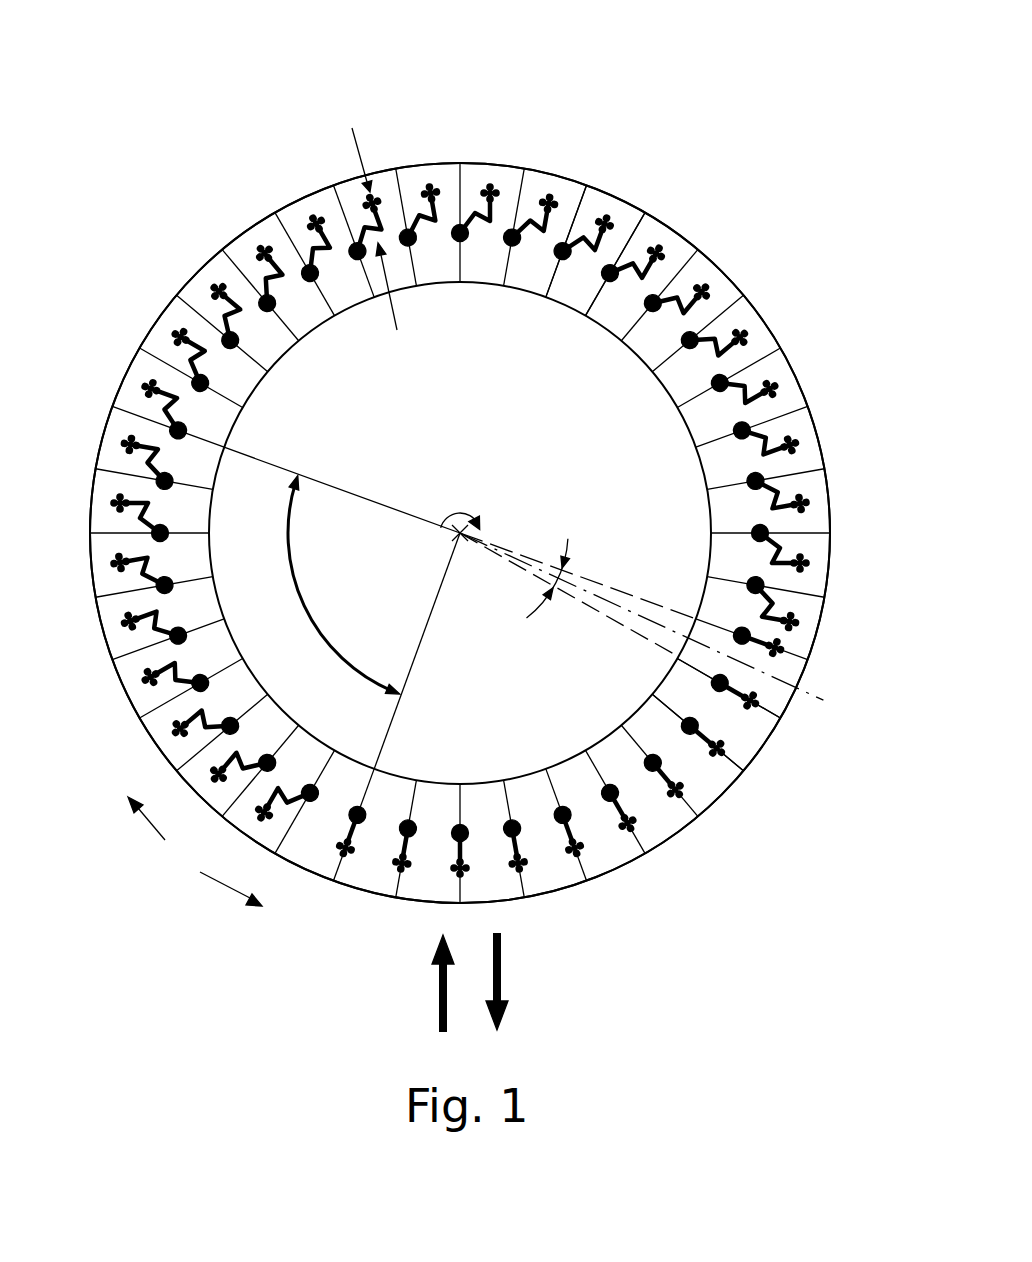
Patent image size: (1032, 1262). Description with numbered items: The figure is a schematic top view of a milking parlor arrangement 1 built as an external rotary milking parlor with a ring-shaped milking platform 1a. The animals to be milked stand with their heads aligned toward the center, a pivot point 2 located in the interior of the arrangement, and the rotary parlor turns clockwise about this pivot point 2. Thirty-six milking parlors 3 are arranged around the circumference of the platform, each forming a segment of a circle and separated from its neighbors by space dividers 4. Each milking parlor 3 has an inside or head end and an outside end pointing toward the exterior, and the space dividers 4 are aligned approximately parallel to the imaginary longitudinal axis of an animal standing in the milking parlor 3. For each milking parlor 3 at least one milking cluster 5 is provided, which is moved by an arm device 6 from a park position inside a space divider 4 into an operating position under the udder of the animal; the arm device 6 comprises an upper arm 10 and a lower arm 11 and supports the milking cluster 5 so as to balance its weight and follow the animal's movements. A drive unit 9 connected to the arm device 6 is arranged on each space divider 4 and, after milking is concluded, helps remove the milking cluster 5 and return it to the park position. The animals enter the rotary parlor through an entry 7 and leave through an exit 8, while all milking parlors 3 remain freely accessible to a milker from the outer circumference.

The milking parlor arrangement 1 is at (447, 72).
The ring-shaped milking platform 1a is at (622, 191).
The pivot point 2 is at (465, 526).
The milking parlor 3 is at (586, 210).
The space divider 4 is at (797, 652).
The milking cluster 5 is at (353, 143).
The arm device 6 is at (393, 306).
The entry 7 is at (432, 1010).
The exit 8 is at (506, 963).
The drive unit 9 is at (505, 245).
The upper arm 10 is at (536, 232).
The lower arm 11 is at (538, 200).